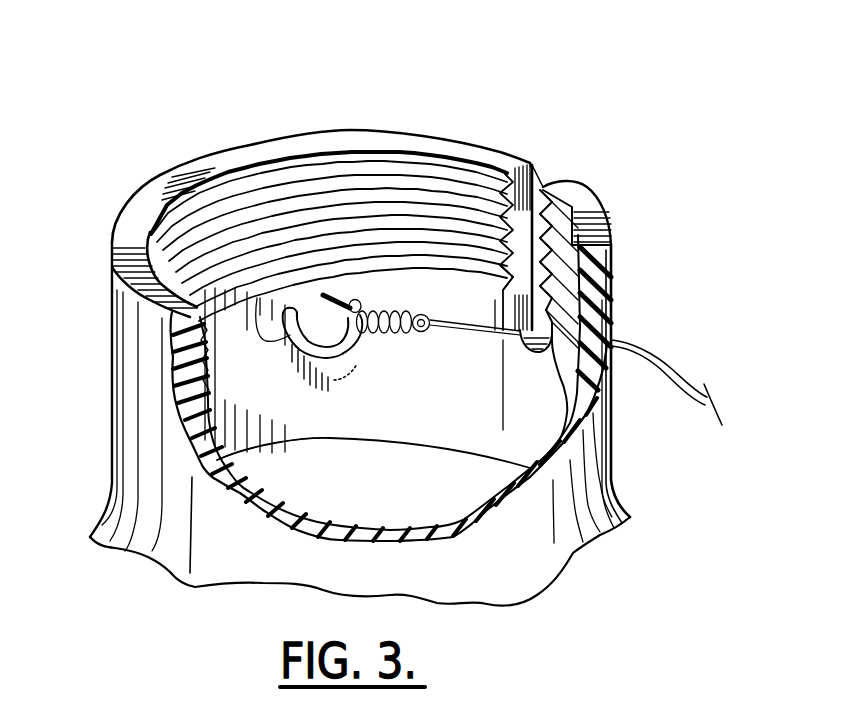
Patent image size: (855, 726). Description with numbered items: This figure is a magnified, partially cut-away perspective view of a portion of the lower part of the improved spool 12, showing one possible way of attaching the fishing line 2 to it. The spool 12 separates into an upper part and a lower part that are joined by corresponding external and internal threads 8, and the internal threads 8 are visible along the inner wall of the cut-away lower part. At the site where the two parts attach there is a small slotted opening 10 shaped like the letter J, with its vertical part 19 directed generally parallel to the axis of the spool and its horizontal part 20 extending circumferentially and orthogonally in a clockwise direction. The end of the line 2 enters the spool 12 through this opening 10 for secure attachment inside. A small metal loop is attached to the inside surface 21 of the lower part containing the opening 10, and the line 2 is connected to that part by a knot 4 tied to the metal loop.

The fishing line 2 is at (660, 357).
The knot 4 is at (381, 308).
The internal threads 8 is at (218, 208).
The slotted opening 10 is at (549, 173).
The spool 12 is at (588, 98).
The vertical part of the J-shaped opening 19 is at (532, 268).
The horizontal part of the J-shaped opening 20 is at (542, 360).
The inside surface 21 is at (409, 411).